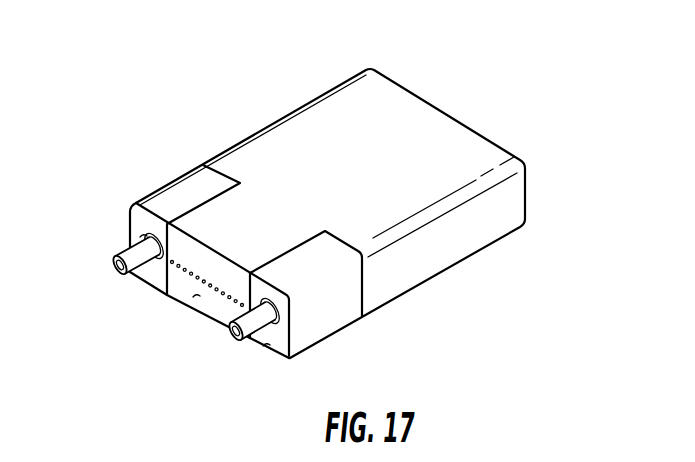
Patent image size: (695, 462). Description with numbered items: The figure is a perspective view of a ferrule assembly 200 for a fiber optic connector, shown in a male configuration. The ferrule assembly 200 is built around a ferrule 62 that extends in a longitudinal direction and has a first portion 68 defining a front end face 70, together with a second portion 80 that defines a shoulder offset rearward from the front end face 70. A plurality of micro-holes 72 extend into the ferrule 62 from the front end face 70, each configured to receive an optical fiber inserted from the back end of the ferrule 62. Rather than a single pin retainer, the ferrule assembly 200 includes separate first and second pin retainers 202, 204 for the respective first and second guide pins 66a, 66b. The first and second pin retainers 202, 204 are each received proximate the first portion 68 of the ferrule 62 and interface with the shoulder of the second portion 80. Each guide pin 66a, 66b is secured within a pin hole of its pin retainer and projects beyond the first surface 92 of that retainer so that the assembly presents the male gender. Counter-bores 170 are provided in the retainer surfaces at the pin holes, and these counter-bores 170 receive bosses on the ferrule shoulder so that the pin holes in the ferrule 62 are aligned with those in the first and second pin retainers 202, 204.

The ferrule assembly 200 is at (183, 67).
The ferrule 62 is at (290, 112).
The second portion 80 is at (243, 149).
The first portion 68 is at (232, 208).
The first pin retainer 202 is at (140, 200).
The second pin retainer 204 is at (356, 332).
The micro-holes 72 is at (170, 297).
The front end face 70 is at (197, 295).
The first guide pin 66a is at (112, 267).
The second guide pin 66b is at (238, 338).
The counter-bores 170 is at (276, 323).
The first surface 92 is at (143, 225).